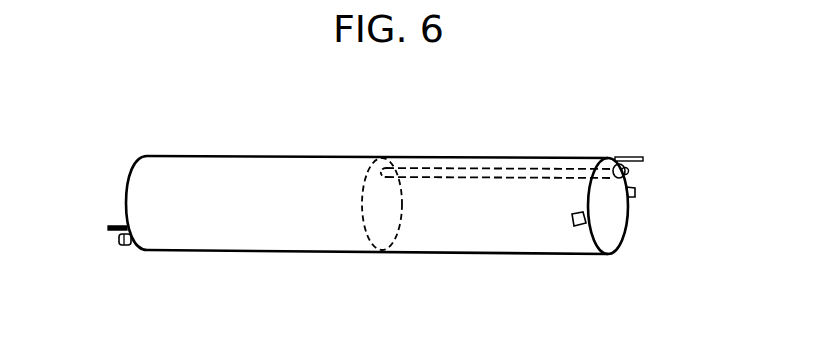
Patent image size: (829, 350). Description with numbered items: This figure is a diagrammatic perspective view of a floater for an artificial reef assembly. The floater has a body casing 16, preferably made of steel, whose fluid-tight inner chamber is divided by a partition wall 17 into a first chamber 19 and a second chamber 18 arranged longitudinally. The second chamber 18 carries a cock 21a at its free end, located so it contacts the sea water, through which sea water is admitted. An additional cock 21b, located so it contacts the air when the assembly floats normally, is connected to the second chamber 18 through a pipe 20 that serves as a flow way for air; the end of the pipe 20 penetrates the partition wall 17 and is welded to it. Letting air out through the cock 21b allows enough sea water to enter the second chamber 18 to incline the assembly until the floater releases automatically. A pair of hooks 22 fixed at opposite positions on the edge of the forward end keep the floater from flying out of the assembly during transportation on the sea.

The body casing 16 is at (265, 157).
The partition wall 17 is at (392, 238).
The second chamber 18 is at (295, 238).
The first chamber 19 is at (483, 245).
The pipe 20 is at (480, 167).
The cock 21a is at (122, 246).
The additional cock 21b is at (637, 156).
The hooks 22 is at (637, 192).